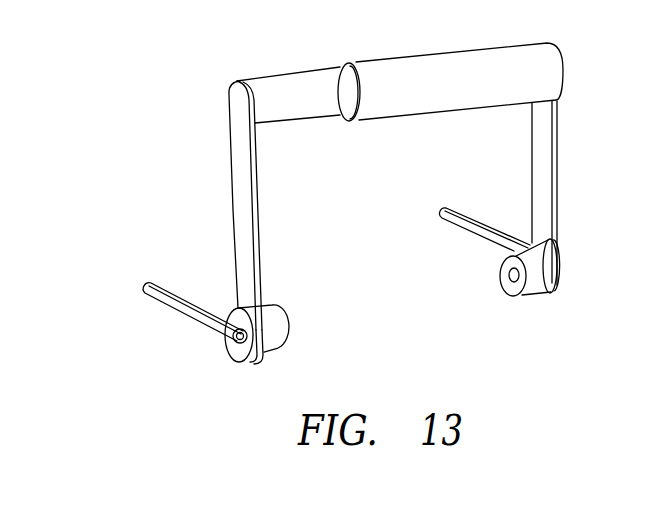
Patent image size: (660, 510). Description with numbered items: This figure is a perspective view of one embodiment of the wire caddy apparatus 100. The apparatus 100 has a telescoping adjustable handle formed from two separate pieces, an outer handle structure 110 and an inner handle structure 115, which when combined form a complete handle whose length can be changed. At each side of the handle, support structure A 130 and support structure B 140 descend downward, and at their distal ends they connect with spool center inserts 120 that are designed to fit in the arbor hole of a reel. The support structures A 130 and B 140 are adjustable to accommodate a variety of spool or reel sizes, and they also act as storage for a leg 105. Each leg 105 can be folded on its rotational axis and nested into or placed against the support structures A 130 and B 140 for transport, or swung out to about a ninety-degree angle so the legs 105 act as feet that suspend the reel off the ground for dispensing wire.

The wire caddy apparatus 100 is at (161, 126).
The leg 105 is at (451, 231).
The outer handle structure 110 is at (402, 113).
The inner handle structure 115 is at (294, 122).
The spool center insert 120 is at (288, 325).
The support structure A 130 is at (266, 261).
The support structure B 140 is at (532, 183).